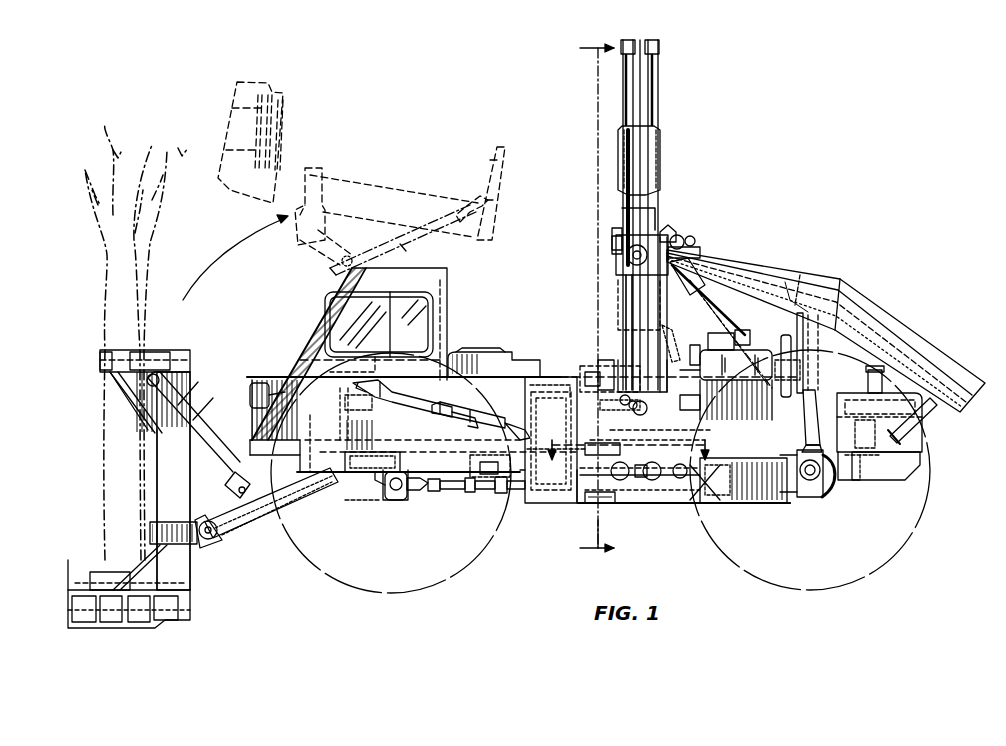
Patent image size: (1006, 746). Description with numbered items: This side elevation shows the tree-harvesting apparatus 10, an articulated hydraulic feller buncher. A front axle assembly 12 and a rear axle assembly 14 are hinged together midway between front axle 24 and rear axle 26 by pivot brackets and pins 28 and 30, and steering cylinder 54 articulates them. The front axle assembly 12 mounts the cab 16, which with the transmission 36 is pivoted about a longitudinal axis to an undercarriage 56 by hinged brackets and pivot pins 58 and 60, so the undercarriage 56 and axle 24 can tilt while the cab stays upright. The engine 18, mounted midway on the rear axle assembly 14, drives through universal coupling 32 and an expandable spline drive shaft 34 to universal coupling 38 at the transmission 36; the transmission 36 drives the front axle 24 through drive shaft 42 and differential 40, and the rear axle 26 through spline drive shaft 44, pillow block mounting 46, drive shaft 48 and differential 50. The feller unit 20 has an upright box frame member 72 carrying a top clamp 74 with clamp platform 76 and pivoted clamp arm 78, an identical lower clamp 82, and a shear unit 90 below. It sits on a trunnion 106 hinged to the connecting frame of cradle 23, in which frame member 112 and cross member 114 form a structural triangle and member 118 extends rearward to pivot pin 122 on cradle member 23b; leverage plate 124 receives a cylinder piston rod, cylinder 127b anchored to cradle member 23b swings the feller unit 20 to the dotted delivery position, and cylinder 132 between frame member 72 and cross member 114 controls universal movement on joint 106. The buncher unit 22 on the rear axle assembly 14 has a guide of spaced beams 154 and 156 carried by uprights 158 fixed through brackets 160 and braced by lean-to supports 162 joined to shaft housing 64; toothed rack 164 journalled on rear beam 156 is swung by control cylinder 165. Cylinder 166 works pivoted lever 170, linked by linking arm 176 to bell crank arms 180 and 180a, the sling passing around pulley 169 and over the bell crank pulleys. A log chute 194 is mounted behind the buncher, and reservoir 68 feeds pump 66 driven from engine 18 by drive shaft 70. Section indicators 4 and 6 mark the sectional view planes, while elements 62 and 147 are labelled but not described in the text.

The section line 4- 4 is at (588, 299).
The section line 6- 6 is at (538, 440).
The tree-harvesting apparatus 10 is at (413, 262).
The front axle assembly 12 is at (330, 478).
The rear axle assembly 14 is at (706, 505).
The cab 16 is at (445, 278).
The engine 18 is at (748, 352).
The feller unit 20 is at (175, 350).
The buncher unit 22 is at (668, 198).
The cradle 23 is at (550, 399).
The cradle member 23b is at (350, 402).
The front axle 24 is at (380, 502).
The rear axle 26 is at (816, 497).
The pivot bracket and pin 28 is at (596, 368).
The pivot bracket and pin 30 is at (608, 503).
The universal coupling 32 is at (632, 410).
The spline drive shaft 34 is at (596, 443).
The transmission 36 is at (540, 503).
The universal coupling 38 is at (585, 375).
The differential 40 is at (410, 500).
The drive shaft 42 is at (460, 489).
The spline drive shaft 44 is at (605, 476).
The pillow block mounting 46 is at (695, 503).
The drive shaft 48 is at (725, 505).
The differential 50 is at (798, 498).
The steering cylinder 54 is at (610, 440).
The undercarriage 56 is at (383, 492).
The hinged bracket and pivot pin 58 is at (350, 475).
The hinged bracket and pivot pin 60 is at (492, 492).
The hydraulic fluid tank 62 is at (492, 355).
The shaft housing 64 is at (836, 480).
The pump 66 is at (935, 415).
The reservoir 68 is at (915, 470).
The drive shaft 70 is at (830, 400).
The box frame member 72 is at (190, 493).
The top clamp 74 is at (142, 352).
The clamp platform 76 is at (110, 380).
The pivoted clamp arm 78 is at (100, 360).
The lower clamp 82 is at (95, 580).
The shear unit 90 is at (192, 606).
The trunnion 106 is at (180, 545).
The frame member 112 is at (220, 548).
The cross member 114 is at (222, 532).
The member 118 is at (275, 498).
The pivot pin 122 is at (372, 425).
The leverage plate 124 is at (345, 425).
The cylinder 127b is at (485, 420).
The cylinder 132 is at (205, 440).
The guide 147 is at (616, 228).
The beam 154 is at (612, 250).
The beam 156 is at (702, 252).
The upright 158 is at (690, 358).
The bracket 160 is at (800, 452).
The lean-to support 162 is at (718, 282).
The toothed rack 164 is at (696, 242).
The control cylinder 165 is at (686, 336).
The cylinder 166 is at (626, 300).
The pulley 169 is at (622, 398).
The pivoted lever 170 is at (682, 236).
The linking arm 176 is at (658, 212).
The bell crank arm 180 is at (626, 95).
The bell crank arm 180a is at (654, 98).
The log chute 194 is at (805, 282).